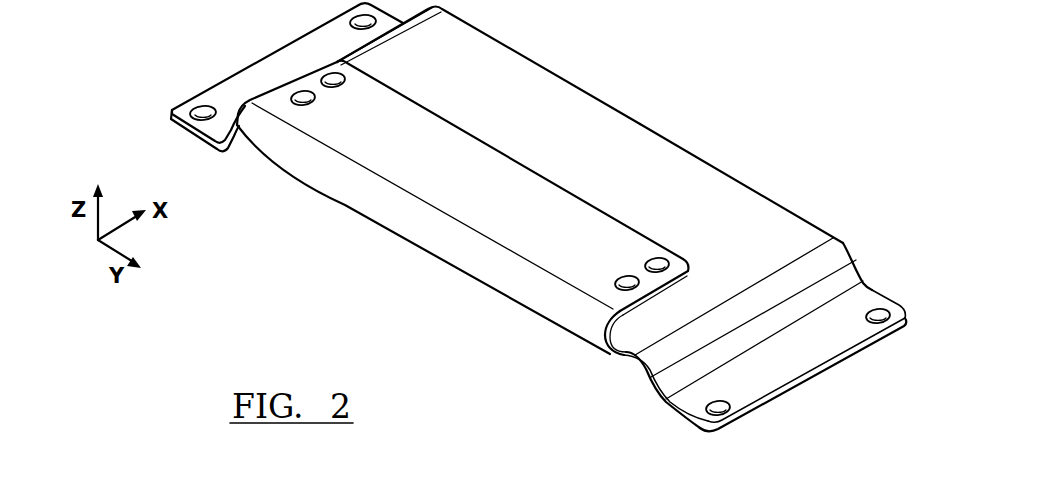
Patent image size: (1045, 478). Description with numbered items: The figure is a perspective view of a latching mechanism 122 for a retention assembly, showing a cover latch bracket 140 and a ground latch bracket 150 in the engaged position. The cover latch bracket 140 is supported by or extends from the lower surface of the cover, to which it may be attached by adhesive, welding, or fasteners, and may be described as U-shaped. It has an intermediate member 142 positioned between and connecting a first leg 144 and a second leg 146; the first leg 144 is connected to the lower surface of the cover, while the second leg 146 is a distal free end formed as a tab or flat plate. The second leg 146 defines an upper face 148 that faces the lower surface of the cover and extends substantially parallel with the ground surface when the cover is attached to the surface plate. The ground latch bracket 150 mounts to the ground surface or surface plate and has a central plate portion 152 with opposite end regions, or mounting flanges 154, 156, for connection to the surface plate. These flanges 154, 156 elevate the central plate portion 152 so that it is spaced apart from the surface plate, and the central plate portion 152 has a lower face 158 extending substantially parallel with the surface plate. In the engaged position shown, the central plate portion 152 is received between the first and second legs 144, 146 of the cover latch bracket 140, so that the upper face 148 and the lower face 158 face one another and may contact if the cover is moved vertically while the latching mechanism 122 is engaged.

The latching mechanism 122 is at (747, 44).
The cover latch bracket 140 is at (522, 242).
The intermediate member 142 is at (510, 285).
The first leg 144 is at (330, 140).
The second leg 146 is at (613, 358).
The upper face 148 is at (622, 357).
The ground latch bracket 150 is at (772, 227).
The central plate portion 152 is at (610, 140).
The mounting flange 154 is at (833, 340).
The mounting flange 156 is at (173, 108).
The lower face 158 is at (730, 173).